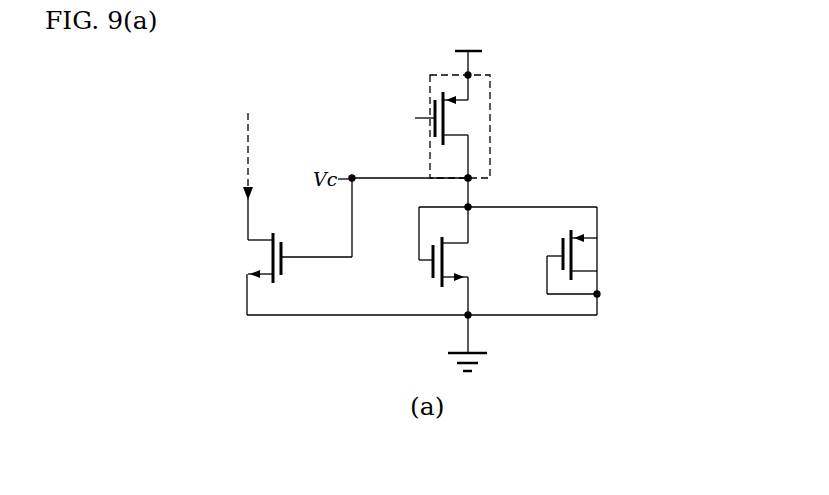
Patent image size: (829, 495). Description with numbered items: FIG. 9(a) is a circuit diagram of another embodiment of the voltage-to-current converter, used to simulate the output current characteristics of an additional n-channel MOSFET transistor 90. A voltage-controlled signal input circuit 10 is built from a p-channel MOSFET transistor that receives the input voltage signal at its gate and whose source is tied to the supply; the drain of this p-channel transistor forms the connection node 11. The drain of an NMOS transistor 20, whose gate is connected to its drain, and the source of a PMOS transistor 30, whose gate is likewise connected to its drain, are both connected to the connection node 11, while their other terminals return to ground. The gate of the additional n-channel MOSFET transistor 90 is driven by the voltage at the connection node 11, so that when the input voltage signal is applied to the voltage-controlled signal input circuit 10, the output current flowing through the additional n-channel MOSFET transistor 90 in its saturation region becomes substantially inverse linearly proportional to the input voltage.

The voltage-controlled signal input circuit 10 is at (490, 95).
The connection node 11 is at (470, 180).
The NMOS transistor 20 is at (452, 233).
The PMOS transistor 30 is at (584, 236).
The additional n-channel MOSFET transistor 90 is at (262, 237).